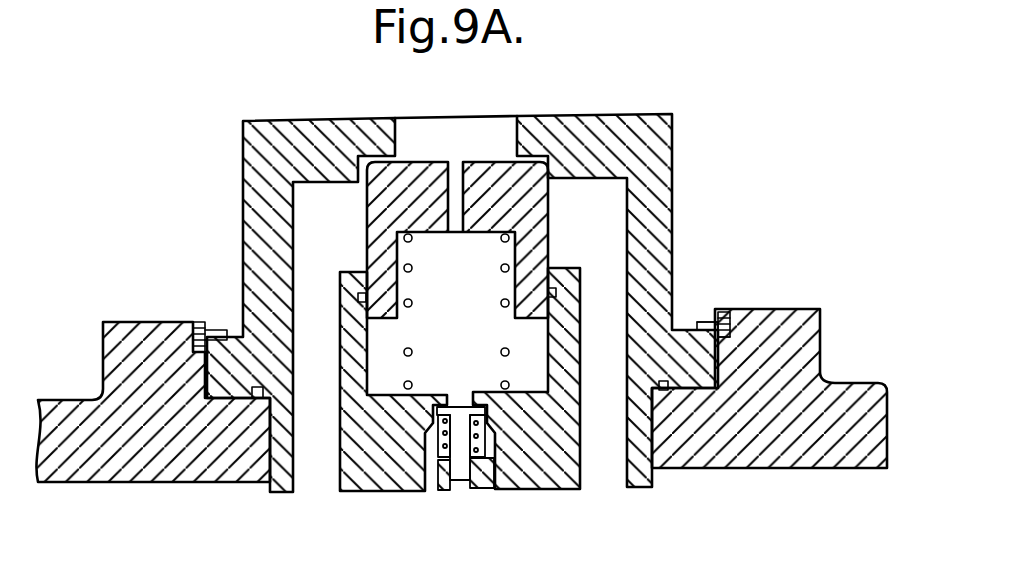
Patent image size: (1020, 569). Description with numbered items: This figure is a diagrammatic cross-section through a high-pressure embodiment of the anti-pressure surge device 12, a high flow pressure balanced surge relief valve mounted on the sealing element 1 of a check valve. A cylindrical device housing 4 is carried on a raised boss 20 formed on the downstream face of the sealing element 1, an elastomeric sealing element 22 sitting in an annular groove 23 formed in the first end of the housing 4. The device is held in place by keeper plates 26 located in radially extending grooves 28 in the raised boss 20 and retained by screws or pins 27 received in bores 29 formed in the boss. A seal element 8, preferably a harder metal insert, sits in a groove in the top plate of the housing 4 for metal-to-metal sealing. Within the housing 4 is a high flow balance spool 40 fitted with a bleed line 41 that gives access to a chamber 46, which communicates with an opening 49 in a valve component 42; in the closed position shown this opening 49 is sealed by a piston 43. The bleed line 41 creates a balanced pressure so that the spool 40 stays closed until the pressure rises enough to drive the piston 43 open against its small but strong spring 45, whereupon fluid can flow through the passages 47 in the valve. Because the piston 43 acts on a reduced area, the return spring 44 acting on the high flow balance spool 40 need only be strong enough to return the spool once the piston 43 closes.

The sealing element 1 is at (87, 458).
The device housing 4 is at (656, 230).
The seal element 8 is at (374, 158).
The anti-pressure surge device 12 is at (181, 193).
The raised boss 20 is at (123, 364).
The elastomeric sealing element 22 is at (252, 398).
The annular groove 23 is at (668, 386).
The keeper plate 26 is at (705, 317).
The screw or pin 27 is at (726, 316).
The radially extending groove 28 is at (728, 326).
The bore 29 is at (724, 343).
The high flow balance spool 40 is at (533, 197).
The bleed line 41 is at (457, 182).
The valve component 42 is at (537, 375).
The piston 43 is at (458, 463).
The return spring 44 is at (403, 352).
The spring 45 is at (444, 422).
The chamber 46 is at (653, 472).
The passage 47 is at (313, 318).
The opening 49 is at (462, 393).